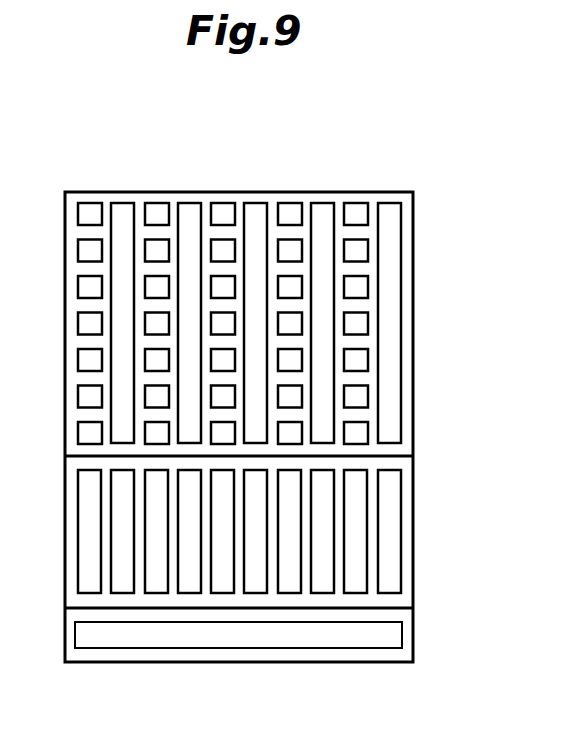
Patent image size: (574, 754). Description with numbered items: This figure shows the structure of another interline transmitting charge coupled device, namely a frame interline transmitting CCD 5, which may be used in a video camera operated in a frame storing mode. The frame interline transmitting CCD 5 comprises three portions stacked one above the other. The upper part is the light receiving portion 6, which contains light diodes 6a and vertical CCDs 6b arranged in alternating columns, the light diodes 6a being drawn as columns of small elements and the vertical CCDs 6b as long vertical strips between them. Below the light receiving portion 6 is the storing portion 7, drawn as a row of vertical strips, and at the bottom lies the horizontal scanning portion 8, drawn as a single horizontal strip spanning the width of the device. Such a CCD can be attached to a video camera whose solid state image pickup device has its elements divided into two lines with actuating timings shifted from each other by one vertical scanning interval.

The frame interline transmitting CCD 5 is at (262, 180).
The light receiving portion 6 is at (273, 270).
The light diodes 6a is at (188, 212).
The vertical CCDs 6b is at (293, 212).
The storing portion 7 is at (422, 460).
The horizontal scanning portion 8 is at (218, 636).